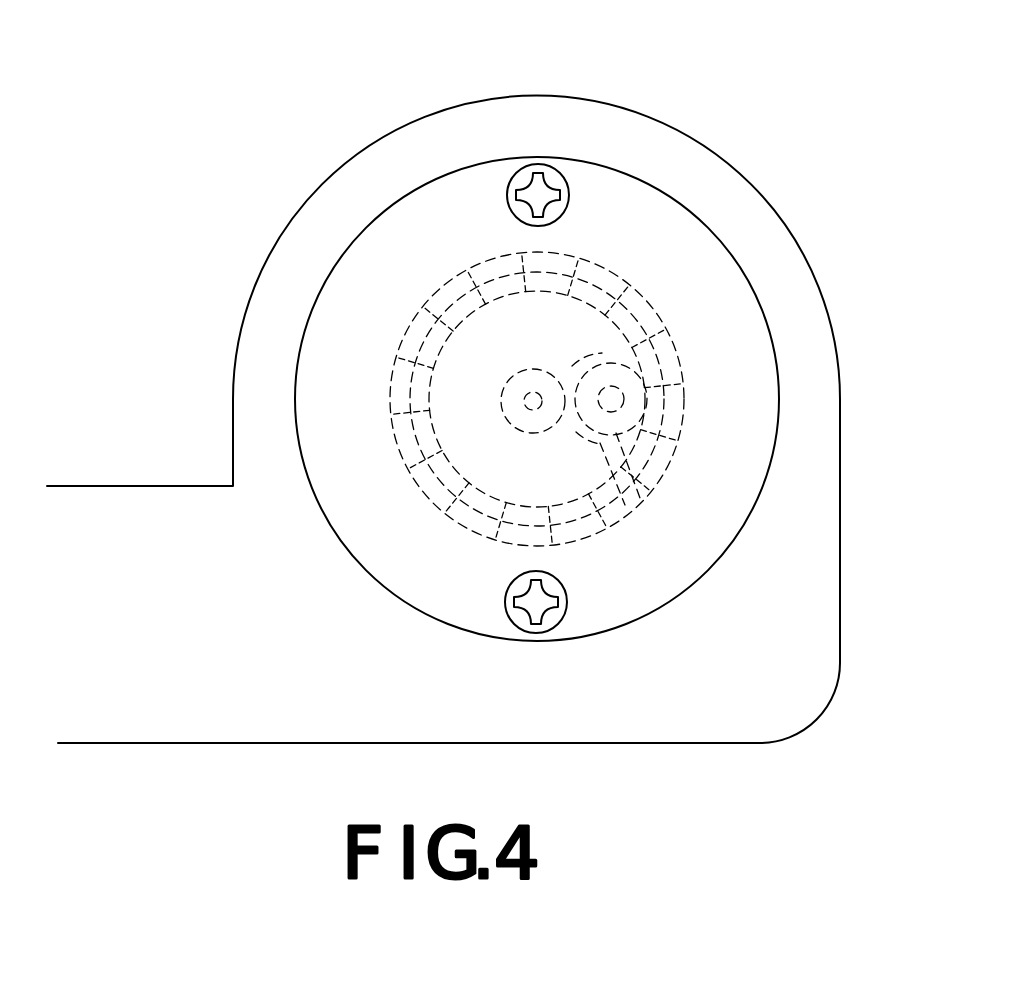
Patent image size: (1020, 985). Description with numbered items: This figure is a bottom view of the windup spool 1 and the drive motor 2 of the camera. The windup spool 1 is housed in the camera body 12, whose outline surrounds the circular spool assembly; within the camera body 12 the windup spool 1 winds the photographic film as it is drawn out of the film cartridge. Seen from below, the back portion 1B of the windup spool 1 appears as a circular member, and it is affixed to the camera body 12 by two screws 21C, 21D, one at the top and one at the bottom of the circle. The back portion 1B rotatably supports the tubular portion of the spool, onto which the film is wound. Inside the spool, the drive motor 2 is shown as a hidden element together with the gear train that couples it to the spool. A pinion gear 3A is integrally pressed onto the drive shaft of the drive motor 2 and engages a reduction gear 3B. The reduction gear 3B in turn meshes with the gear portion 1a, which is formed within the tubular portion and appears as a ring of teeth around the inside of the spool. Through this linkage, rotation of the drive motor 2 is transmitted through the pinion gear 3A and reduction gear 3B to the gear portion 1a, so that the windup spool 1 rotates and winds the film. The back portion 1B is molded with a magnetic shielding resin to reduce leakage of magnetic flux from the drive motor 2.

The camera body 12 is at (312, 222).
The back portion 1B is at (765, 412).
The gear portion 1a is at (673, 381).
The windup spool 1 is at (668, 424).
The drive motor 2 is at (606, 270).
The pinion gear 3A is at (500, 433).
The reduction gear 3B is at (618, 437).
The screw 21C is at (527, 173).
The screw 21D is at (552, 622).